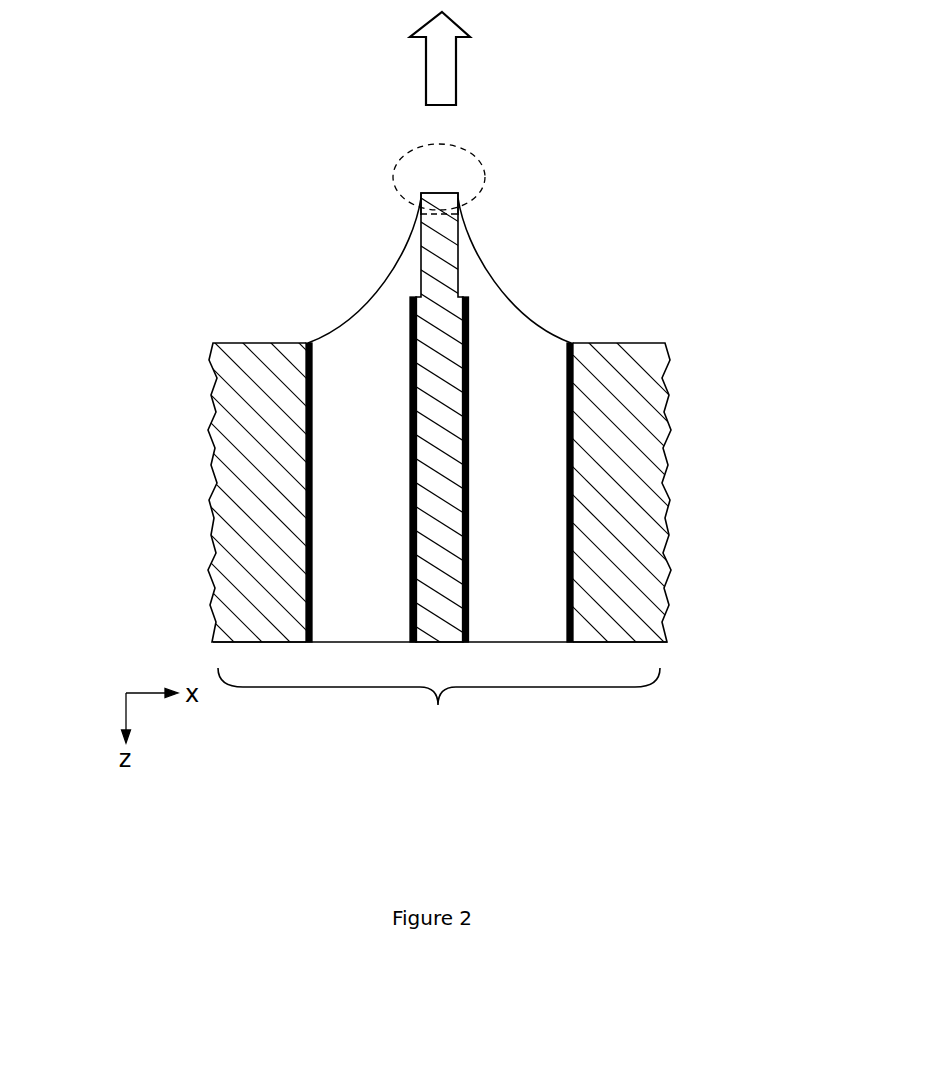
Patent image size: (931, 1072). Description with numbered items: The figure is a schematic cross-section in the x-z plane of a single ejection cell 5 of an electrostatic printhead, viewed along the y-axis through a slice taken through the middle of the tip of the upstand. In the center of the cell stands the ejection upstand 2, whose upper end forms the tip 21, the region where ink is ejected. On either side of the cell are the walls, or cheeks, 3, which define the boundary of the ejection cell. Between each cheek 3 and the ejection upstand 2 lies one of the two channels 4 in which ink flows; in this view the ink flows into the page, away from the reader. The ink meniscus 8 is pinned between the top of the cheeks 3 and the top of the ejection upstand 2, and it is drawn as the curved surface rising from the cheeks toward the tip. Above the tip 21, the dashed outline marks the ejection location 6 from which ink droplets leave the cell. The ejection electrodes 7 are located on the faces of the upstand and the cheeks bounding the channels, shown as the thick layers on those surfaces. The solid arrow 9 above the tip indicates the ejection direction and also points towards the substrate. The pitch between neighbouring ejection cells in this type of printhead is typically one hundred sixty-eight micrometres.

The ejection upstand 2 is at (425, 501).
The tip 21 is at (424, 242).
The wall 3 is at (228, 377).
The channel 4 is at (374, 421).
The ejection cell 5 is at (439, 711).
The ejection location 6 is at (380, 161).
The ejection electrode 7 is at (325, 607).
The ink meniscus 8 is at (487, 242).
The solid arrow 9 is at (465, 66).